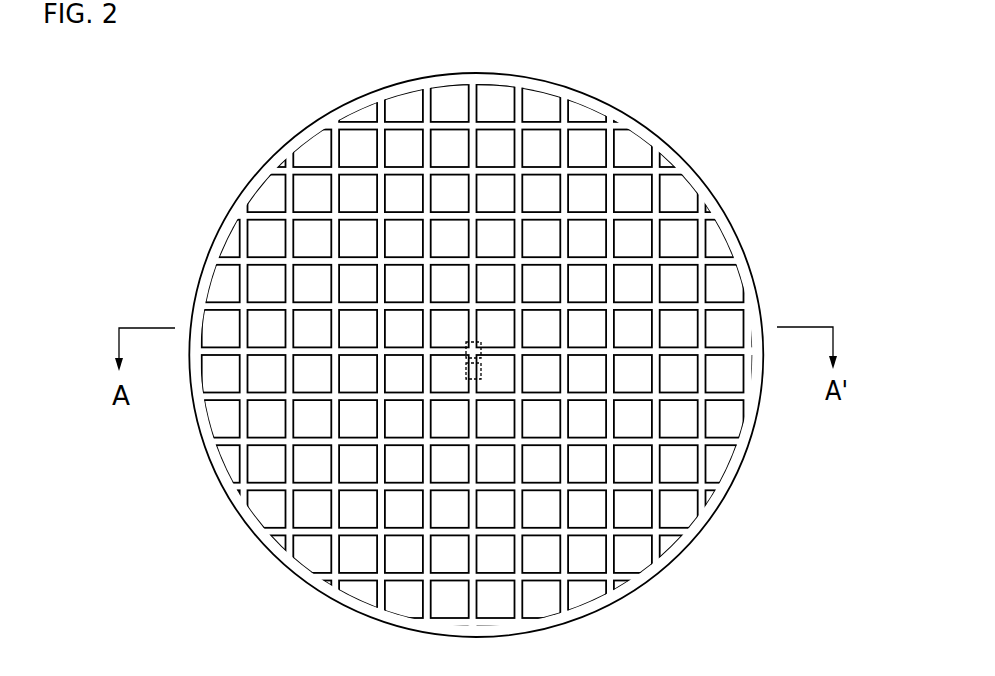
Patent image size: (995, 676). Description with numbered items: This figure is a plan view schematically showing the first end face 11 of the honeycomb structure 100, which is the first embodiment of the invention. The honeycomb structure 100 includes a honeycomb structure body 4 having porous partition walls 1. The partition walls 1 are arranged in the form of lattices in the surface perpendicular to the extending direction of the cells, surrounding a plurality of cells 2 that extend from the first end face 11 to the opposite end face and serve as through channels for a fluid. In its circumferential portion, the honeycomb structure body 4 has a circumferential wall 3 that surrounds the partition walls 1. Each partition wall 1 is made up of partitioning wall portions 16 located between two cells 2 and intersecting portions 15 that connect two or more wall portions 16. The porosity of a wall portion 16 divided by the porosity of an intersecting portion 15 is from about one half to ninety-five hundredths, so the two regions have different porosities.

The honeycomb structure 100 is at (824, 36).
The first end face 11 is at (272, 130).
The partition wall 1 is at (580, 170).
The cell 2 is at (632, 190).
The circumferential wall 3 is at (700, 523).
The honeycomb structure body 4 is at (770, 294).
The intersecting portion 15 is at (463, 353).
The partitioning wall portion 16 is at (468, 368).